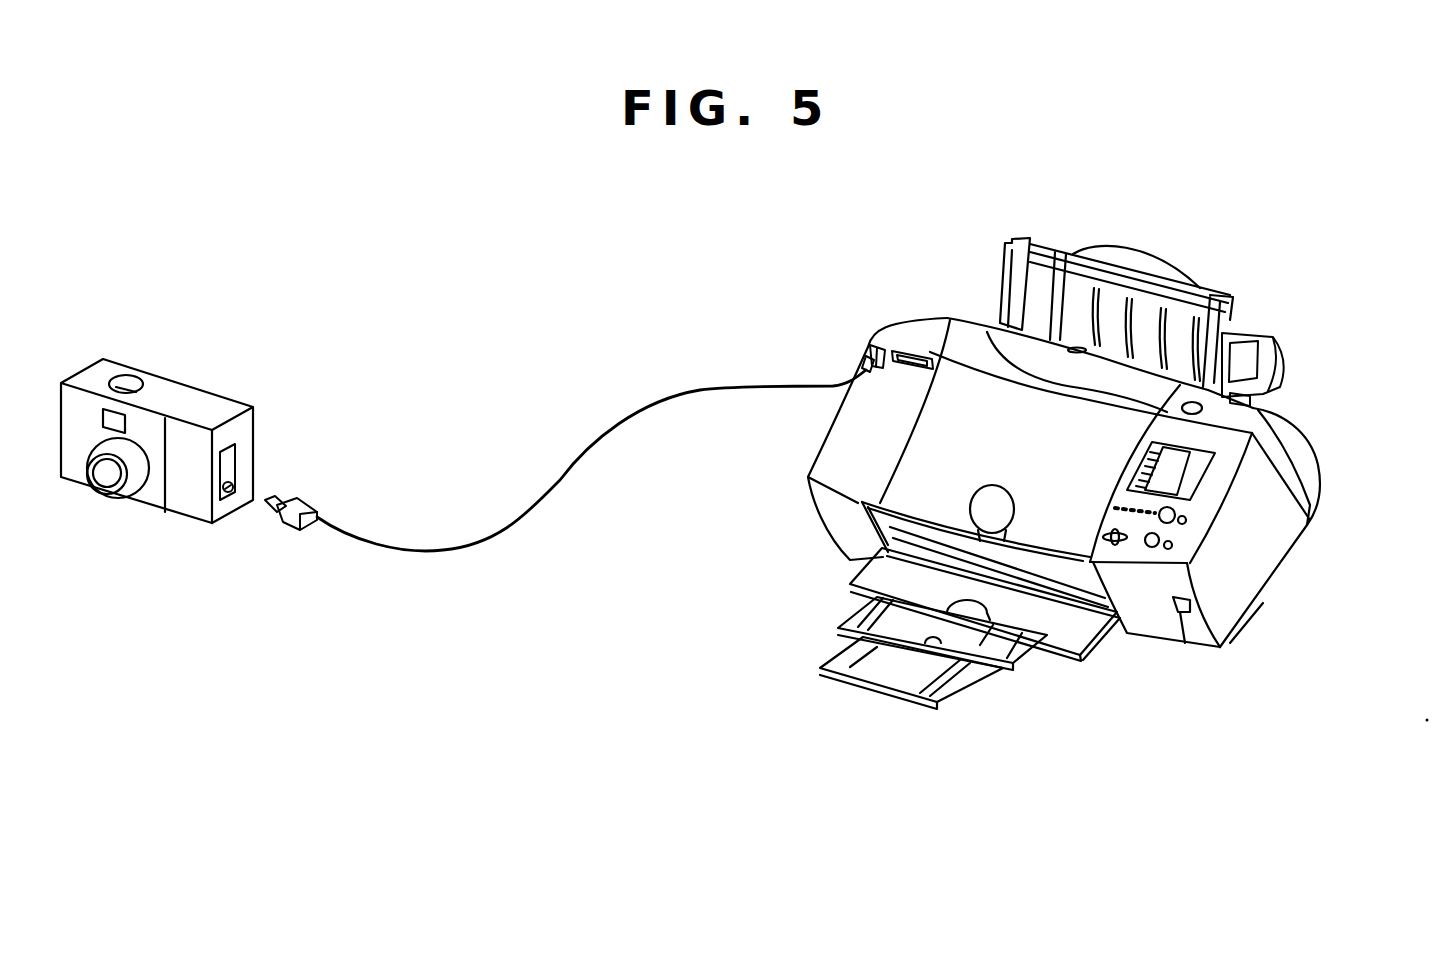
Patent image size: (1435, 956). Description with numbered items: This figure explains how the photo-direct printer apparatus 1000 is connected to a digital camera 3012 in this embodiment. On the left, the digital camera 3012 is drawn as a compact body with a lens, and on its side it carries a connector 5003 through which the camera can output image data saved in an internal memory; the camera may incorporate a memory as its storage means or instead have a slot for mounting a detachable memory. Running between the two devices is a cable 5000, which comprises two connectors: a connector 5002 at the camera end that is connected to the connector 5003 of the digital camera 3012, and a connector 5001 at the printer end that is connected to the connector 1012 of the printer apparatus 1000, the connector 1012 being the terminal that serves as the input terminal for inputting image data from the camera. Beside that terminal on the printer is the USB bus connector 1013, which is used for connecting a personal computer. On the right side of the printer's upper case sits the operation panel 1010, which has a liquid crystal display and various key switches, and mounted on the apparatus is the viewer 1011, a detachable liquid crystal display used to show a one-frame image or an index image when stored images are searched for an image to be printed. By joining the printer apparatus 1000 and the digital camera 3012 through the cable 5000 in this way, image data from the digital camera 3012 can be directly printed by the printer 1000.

The digital camera 3012 is at (170, 390).
The connector 5003 is at (237, 478).
The connector 5002 is at (288, 527).
The cable 5000 is at (560, 480).
The connector 5001 is at (860, 357).
The photo-direct printer apparatus 1000 is at (1288, 402).
The terminal 1012 is at (877, 343).
The USB bus connector 1013 is at (915, 357).
The viewer 1011 is at (1273, 337).
The operation panel 1010 is at (1193, 482).